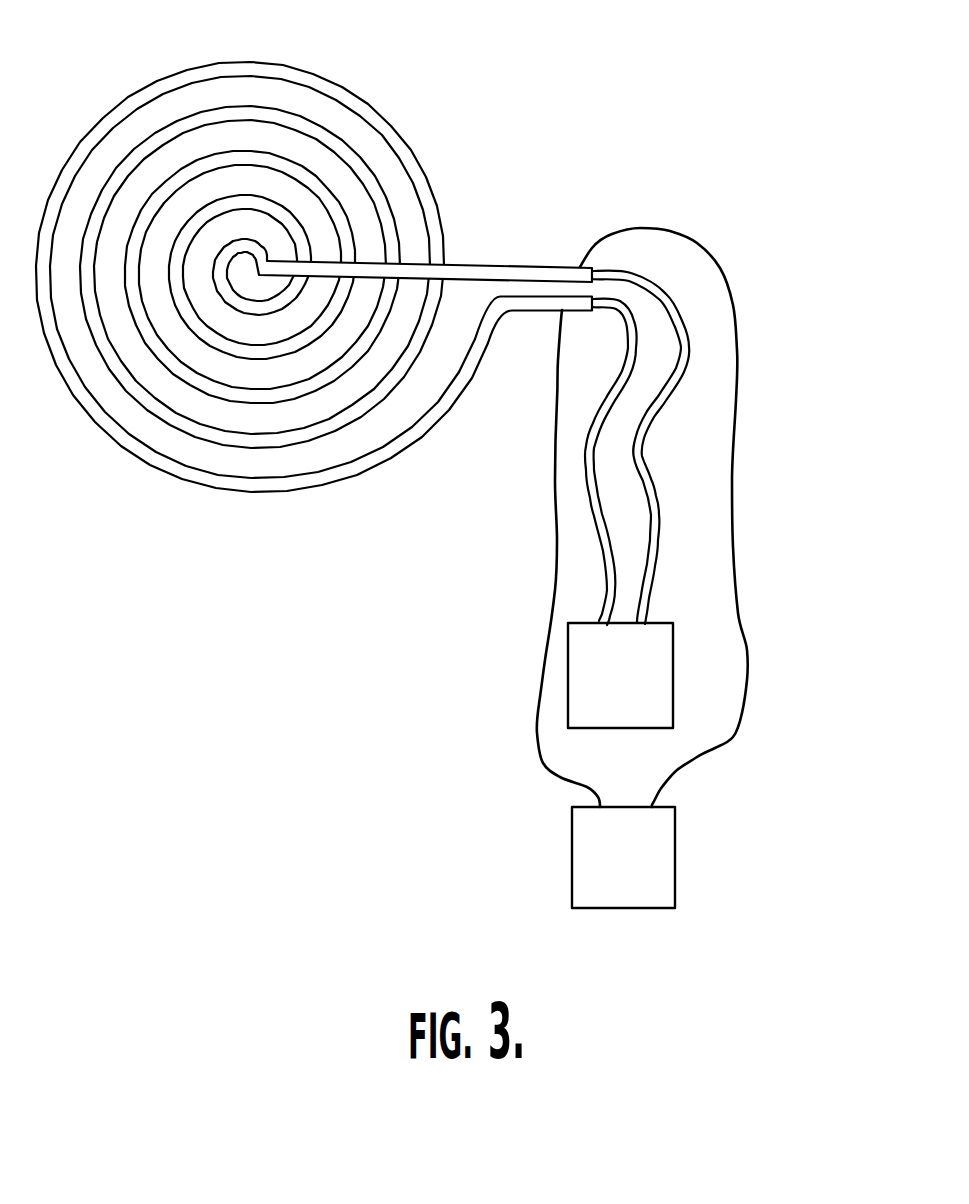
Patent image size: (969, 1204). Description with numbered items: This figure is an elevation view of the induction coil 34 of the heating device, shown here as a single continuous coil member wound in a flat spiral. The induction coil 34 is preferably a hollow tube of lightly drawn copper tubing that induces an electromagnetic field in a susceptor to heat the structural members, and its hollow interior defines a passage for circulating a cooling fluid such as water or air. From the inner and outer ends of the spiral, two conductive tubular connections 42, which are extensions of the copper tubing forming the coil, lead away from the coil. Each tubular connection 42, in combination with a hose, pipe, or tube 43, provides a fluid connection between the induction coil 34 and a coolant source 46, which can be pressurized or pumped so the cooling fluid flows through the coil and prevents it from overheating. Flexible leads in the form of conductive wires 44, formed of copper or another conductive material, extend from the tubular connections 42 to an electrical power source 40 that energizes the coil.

The induction coil 34 is at (367, 98).
The conductive tubular connections 42 is at (517, 263).
The hoses, pipes, or tubes 43 is at (600, 545).
The conductive wires 44 is at (537, 703).
The coolant source 46 is at (673, 670).
The electrical power source 40 is at (675, 863).